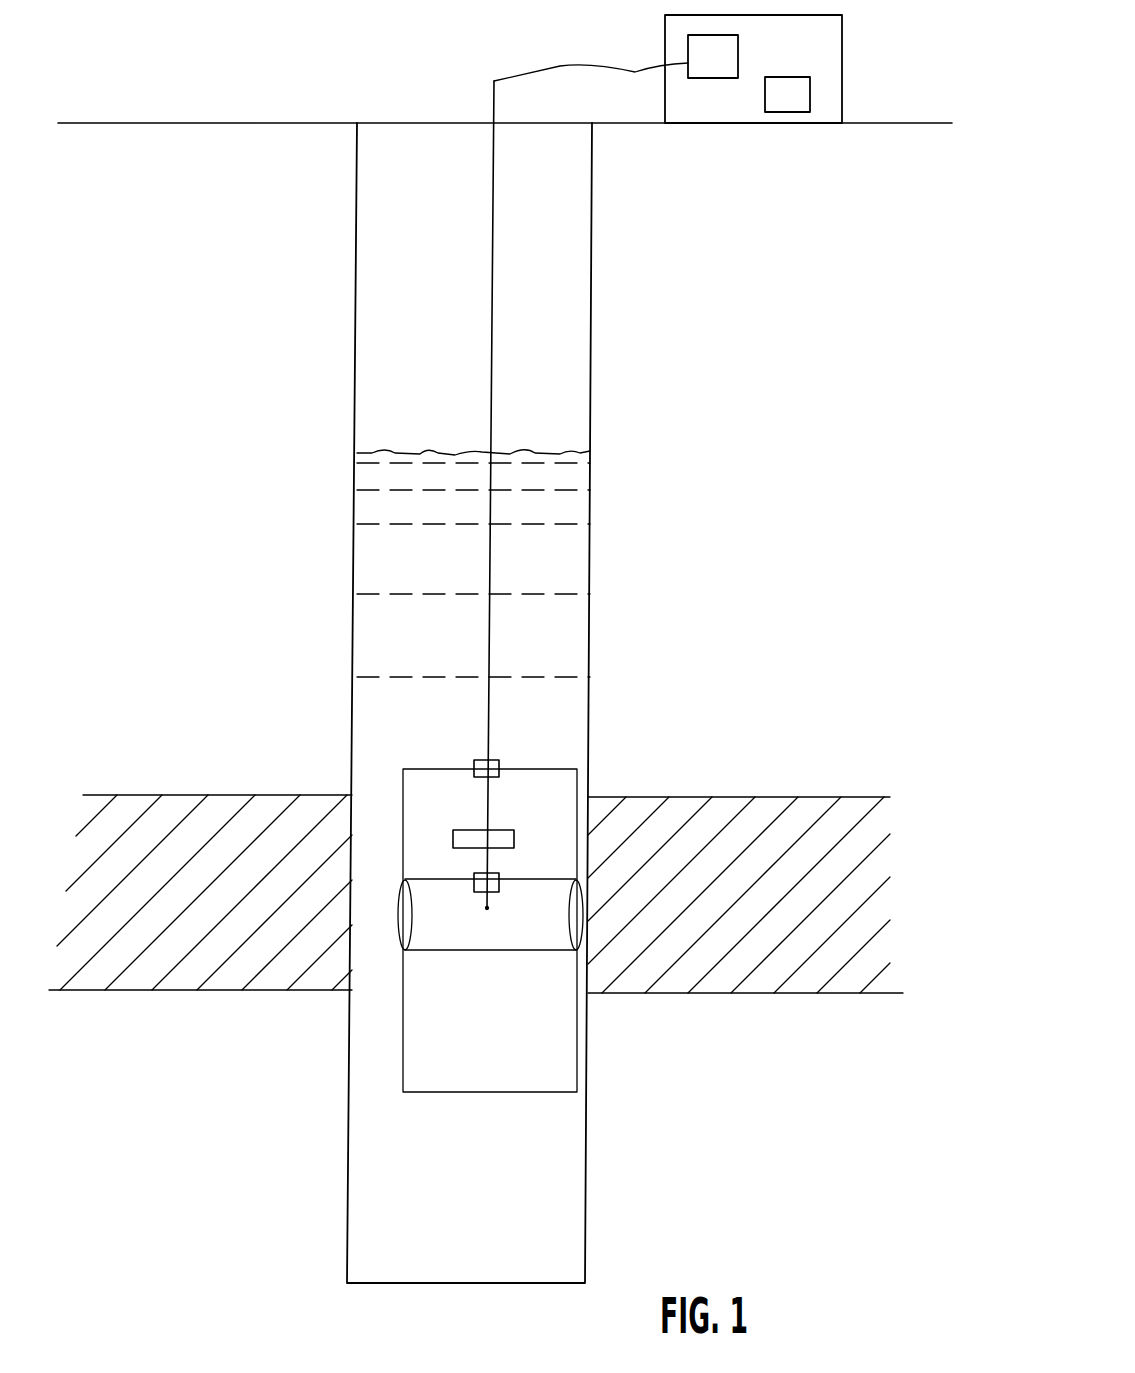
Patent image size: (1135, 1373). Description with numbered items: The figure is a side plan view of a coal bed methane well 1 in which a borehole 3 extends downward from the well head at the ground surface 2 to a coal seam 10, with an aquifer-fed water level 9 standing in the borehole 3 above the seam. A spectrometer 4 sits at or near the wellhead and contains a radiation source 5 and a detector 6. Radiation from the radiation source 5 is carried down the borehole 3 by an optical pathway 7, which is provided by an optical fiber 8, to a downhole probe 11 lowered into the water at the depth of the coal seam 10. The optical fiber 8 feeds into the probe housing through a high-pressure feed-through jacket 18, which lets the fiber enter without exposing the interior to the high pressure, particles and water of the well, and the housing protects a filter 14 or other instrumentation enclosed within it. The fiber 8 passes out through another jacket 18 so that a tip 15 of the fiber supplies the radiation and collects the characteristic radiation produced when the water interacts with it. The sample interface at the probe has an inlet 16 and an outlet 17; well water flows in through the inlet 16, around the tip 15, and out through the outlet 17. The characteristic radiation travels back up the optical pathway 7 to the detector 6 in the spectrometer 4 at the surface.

The coal bed methane well 1 is at (624, 350).
The ground surface 2 is at (248, 121).
The borehole 3 is at (436, 93).
The spectrometer 4 is at (842, 48).
The radiation source 5 is at (713, 56).
The detector 6 is at (787, 95).
The optical pathway 7 is at (560, 66).
The optical fiber 8 is at (490, 648).
The water level 9 is at (592, 449).
The coal seam 10 is at (198, 812).
The logging tool 11 is at (585, 1034).
The filter 14 is at (458, 830).
The tip 15 is at (487, 922).
The inlet 16 is at (394, 944).
The outlet 17 is at (582, 912).
The high-pressure feed-through jacket 18 is at (500, 763).